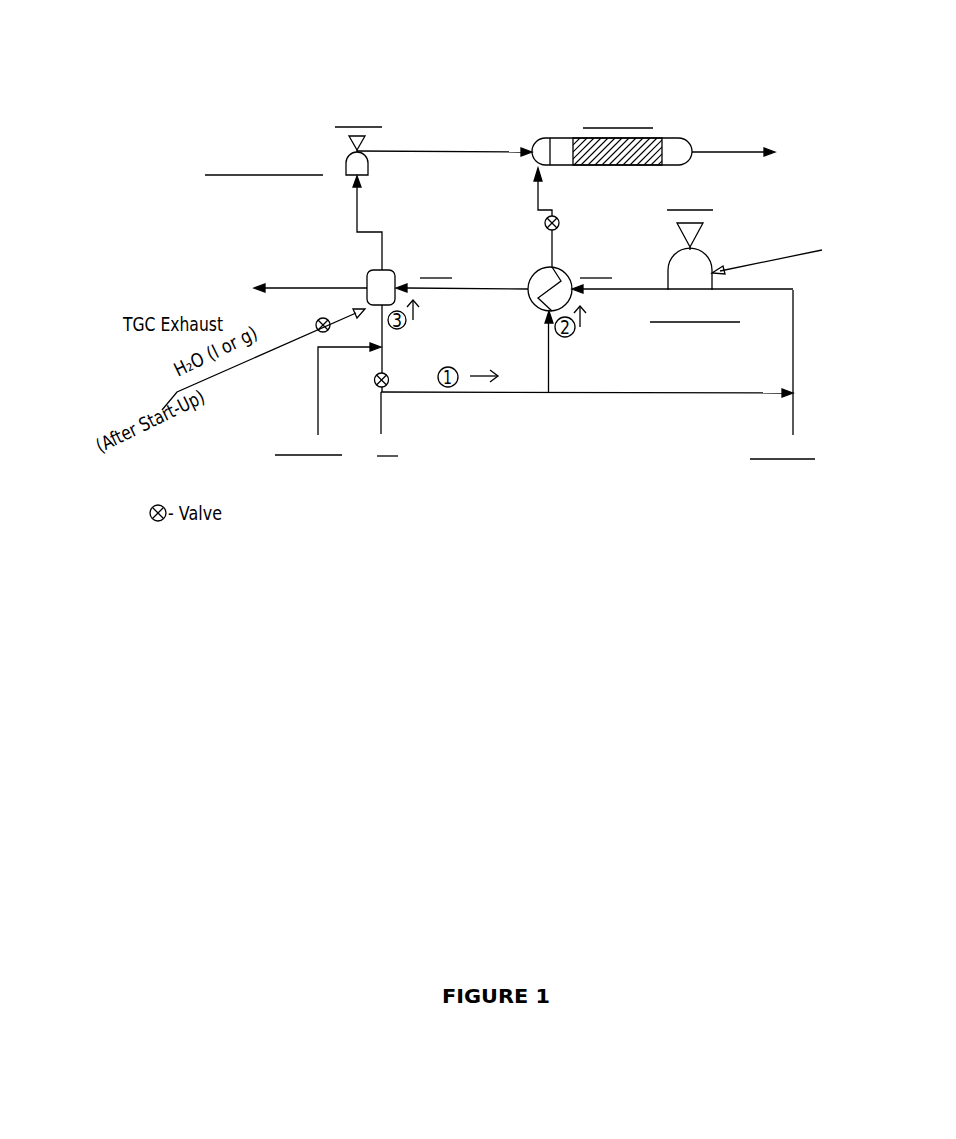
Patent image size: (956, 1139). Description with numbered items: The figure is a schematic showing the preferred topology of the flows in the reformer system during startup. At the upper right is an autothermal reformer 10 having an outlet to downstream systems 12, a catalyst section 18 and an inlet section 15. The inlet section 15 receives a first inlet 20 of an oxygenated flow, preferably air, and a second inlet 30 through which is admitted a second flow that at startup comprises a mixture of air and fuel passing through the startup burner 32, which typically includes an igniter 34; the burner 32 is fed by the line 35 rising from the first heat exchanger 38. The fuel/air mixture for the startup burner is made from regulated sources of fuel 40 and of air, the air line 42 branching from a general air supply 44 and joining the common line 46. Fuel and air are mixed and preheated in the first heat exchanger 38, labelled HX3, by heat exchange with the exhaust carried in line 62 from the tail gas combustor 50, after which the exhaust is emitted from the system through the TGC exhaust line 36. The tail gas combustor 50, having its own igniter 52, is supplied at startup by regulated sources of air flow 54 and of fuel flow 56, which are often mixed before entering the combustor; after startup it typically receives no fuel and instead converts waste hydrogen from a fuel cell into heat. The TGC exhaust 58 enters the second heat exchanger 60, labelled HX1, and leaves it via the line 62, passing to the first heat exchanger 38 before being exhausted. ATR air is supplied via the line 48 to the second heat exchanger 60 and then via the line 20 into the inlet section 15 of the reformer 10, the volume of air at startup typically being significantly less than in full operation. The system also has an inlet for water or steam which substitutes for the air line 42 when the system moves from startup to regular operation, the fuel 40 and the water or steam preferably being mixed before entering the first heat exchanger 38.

The autothermal reformer 10 is at (645, 108).
The outlet to downstream systems 12 is at (700, 152).
The inlet section 15 is at (550, 138).
The catalyst section 18 is at (573, 138).
The first inlet 20 is at (545, 230).
The second inlet 30 is at (444, 139).
The startup burner 32 is at (338, 152).
The igniter 34 is at (363, 102).
The fuel line to start-up burner 35 is at (378, 226).
The TGC exhaust line 36 is at (302, 253).
The first heat exchanger 38 is at (372, 270).
The fuel 40 is at (318, 368).
The air line 42 is at (383, 332).
The general air supply 44 is at (408, 440).
The mixed feed line 46 is at (460, 392).
The line 48 is at (548, 373).
The tail gas combustor 50 is at (713, 262).
The igniter 52 is at (707, 219).
The air flow 54 is at (702, 387).
The fuel flow 56 is at (797, 400).
The TGC exhaust 58 is at (618, 287).
The second heat exchanger 60 is at (558, 266).
The line 62 is at (488, 281).